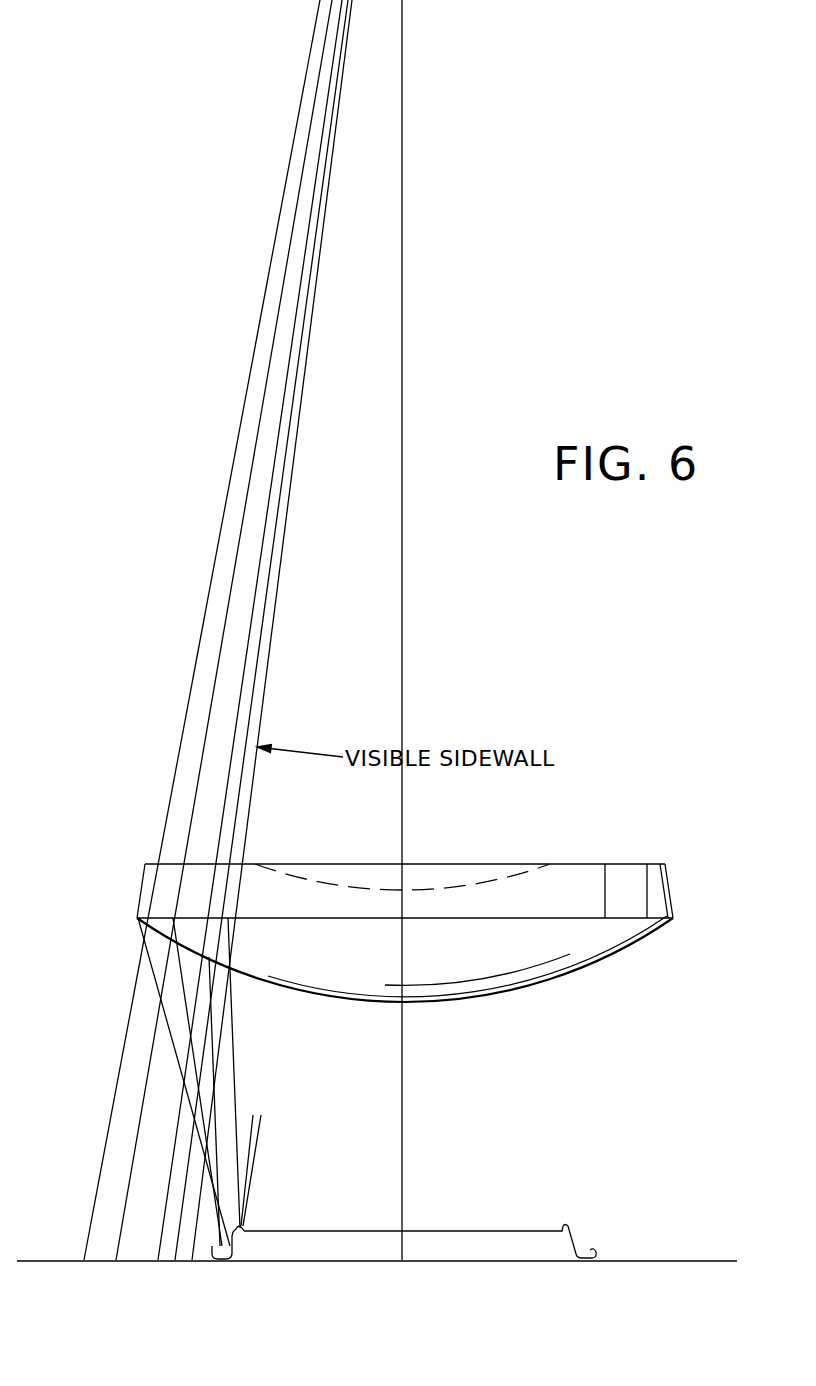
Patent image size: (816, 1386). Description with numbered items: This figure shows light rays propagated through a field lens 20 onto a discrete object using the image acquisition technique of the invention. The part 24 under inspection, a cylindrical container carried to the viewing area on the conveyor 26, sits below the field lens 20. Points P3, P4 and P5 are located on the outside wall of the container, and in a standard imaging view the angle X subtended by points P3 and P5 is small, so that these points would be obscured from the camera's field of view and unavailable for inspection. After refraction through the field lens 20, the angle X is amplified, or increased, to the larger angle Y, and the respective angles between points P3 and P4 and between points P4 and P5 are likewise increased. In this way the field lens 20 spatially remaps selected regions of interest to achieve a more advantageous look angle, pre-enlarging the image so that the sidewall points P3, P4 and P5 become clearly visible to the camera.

The field lens 20 is at (638, 840).
The part under inspection 24 is at (535, 1222).
The conveyor 26 is at (533, 1270).
The point P3 is at (245, 1227).
The point P4 is at (234, 1247).
The point P5 is at (227, 1256).
The angle X is at (217, 1123).
The angle Y is at (236, 746).